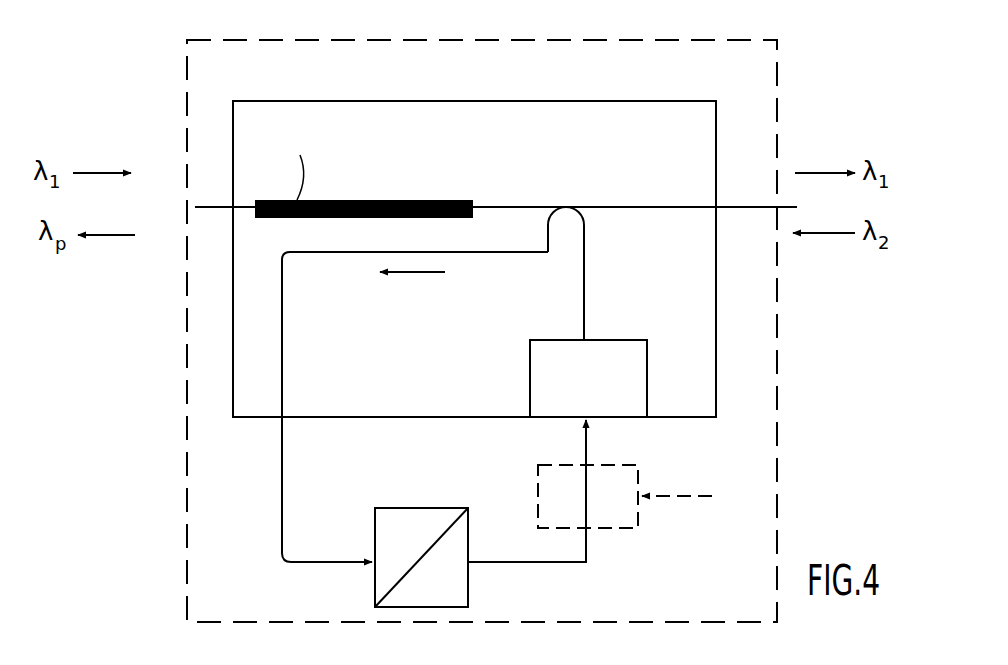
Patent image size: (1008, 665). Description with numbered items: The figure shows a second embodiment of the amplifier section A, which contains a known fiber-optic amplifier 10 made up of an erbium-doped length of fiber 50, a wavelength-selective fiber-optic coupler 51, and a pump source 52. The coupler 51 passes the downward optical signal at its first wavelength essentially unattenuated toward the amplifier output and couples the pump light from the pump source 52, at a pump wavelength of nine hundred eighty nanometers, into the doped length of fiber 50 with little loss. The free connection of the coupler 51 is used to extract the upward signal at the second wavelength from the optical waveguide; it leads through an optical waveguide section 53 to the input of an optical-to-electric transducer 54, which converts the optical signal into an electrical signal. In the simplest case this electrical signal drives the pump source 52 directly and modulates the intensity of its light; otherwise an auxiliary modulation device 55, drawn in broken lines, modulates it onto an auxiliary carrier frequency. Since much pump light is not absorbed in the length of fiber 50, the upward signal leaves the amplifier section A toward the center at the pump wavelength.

The amplifier section A is at (542, 40).
The fiber-optic amplifier 10 is at (716, 128).
The Er3+-doped length of fiber 50 is at (448, 201).
The wavelength-selective fiber-optic coupler 51 is at (561, 207).
The pump source 52 is at (647, 372).
The optical waveguide section 53 is at (282, 350).
The optical-to-electric transducer 54 is at (428, 508).
The auxiliary modulation device 55 is at (633, 465).